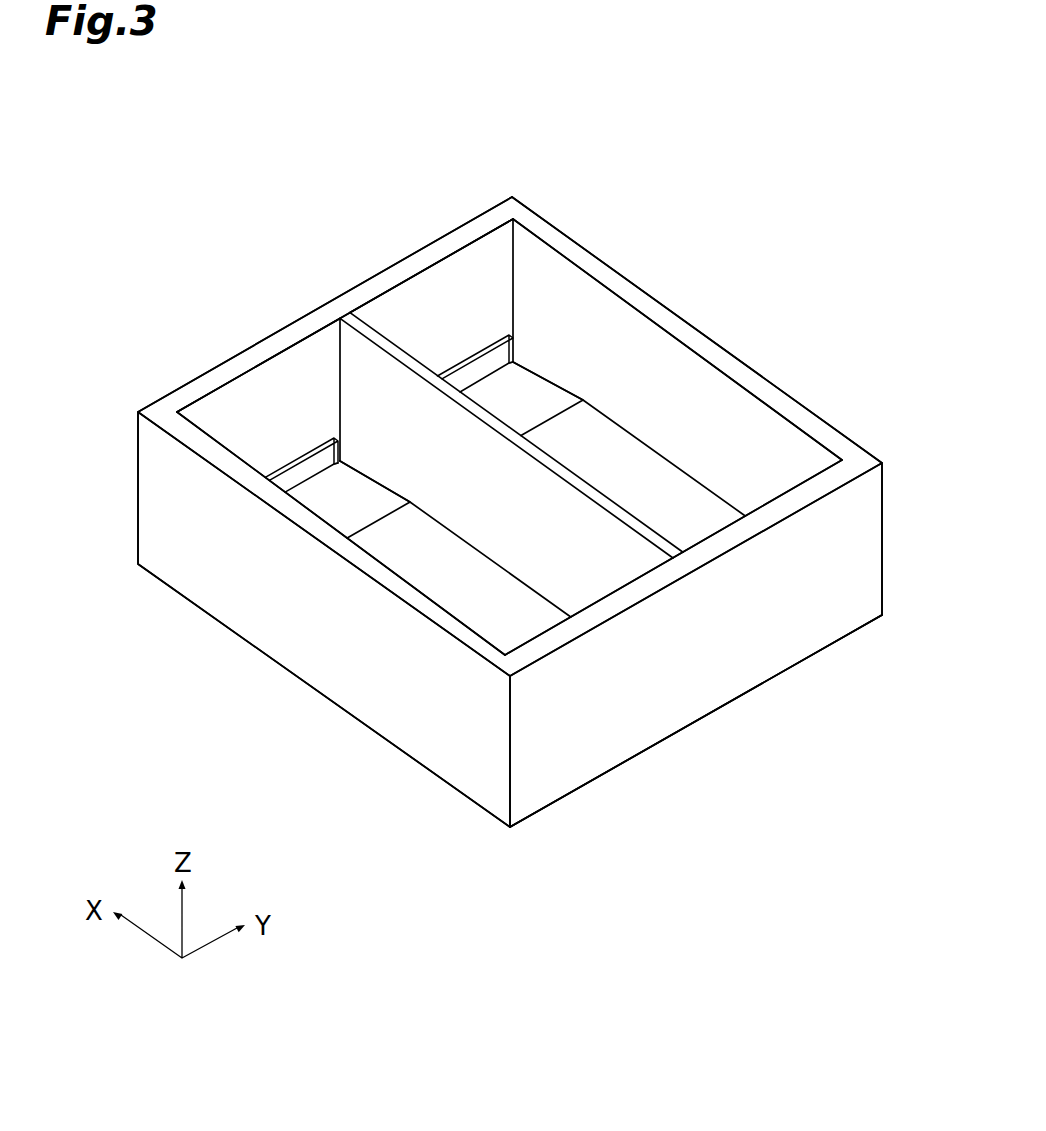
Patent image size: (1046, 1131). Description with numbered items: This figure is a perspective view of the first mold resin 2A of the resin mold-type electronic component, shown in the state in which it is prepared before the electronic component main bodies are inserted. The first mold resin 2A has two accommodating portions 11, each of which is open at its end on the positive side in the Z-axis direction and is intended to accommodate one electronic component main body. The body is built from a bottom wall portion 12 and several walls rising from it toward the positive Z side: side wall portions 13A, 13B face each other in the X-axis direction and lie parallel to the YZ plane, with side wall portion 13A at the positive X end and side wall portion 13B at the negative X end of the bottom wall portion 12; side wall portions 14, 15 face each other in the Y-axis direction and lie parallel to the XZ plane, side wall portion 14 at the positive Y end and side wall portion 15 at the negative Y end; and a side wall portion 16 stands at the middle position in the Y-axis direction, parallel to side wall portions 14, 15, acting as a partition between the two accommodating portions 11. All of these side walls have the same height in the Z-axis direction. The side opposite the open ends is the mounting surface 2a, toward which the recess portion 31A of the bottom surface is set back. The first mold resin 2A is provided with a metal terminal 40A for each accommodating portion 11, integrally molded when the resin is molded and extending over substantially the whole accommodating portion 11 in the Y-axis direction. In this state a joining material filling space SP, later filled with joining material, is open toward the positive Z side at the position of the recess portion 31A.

The first mold resin 2A is at (866, 434).
The mounting surface 2a is at (693, 722).
The accommodating portion 11 is at (238, 392).
The bottom wall portion 12 is at (480, 568).
The side wall portion 13A is at (383, 268).
The side wall portion 13B is at (817, 627).
The side wall portion 14 is at (702, 332).
The side wall portion 15 is at (287, 635).
The side wall portion 16 is at (607, 492).
The recess portion 31A is at (325, 482).
The metal terminal 40A is at (291, 468).
The joining material filling space SP is at (350, 478).